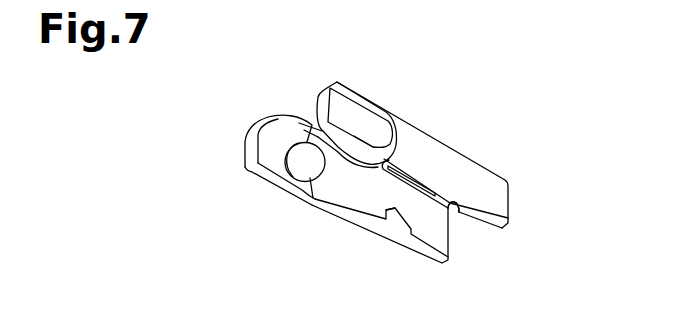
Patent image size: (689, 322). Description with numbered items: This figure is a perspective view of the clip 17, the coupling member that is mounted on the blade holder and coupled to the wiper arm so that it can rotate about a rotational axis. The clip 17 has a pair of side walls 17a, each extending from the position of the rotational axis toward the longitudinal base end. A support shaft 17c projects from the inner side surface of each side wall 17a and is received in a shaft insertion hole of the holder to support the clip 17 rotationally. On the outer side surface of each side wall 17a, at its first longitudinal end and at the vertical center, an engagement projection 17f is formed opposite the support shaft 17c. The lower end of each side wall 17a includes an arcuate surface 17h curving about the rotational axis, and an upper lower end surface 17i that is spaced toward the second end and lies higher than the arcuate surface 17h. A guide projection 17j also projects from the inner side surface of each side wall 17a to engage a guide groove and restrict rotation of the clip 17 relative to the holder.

The clip 17 is at (500, 157).
The side wall 17a is at (447, 155).
The support shaft 17c is at (312, 170).
The engagement projection 17f is at (370, 120).
The arcuate surface 17h is at (412, 104).
The upper lower end surface 17i is at (488, 218).
The guide projection 17j is at (455, 211).